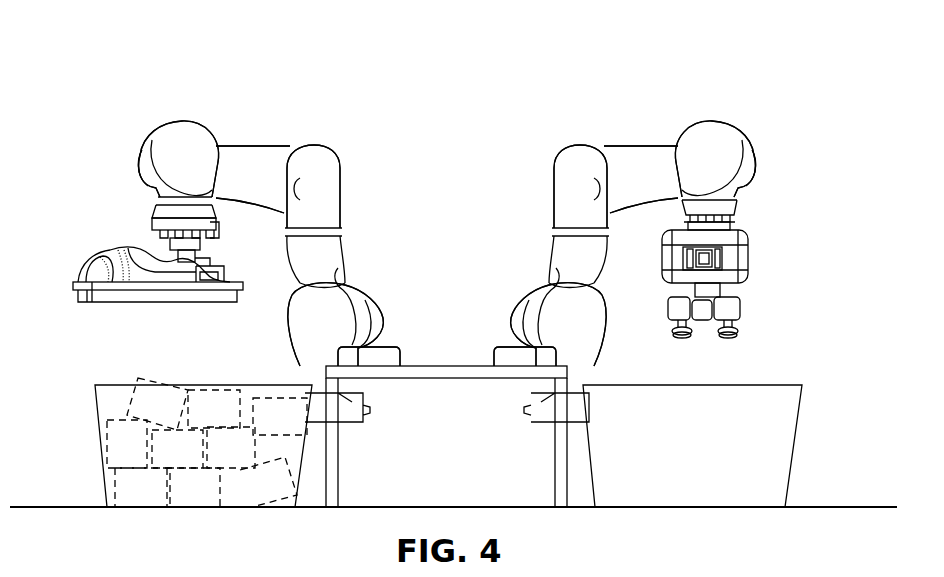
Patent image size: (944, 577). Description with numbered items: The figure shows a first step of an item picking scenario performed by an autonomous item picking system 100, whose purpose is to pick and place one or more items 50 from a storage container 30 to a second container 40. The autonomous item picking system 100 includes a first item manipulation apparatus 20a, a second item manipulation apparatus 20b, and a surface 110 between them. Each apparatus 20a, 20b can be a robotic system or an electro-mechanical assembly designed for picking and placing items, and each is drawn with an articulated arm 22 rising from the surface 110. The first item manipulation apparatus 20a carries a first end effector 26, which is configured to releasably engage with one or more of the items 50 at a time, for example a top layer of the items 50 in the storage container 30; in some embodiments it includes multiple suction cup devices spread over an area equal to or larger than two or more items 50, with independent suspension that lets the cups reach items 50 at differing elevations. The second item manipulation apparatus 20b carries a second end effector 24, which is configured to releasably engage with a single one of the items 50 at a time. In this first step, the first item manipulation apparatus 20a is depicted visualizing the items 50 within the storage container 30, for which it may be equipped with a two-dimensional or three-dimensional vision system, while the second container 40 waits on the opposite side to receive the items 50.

The autonomous item picking system 100 is at (728, 55).
The first item manipulation apparatus 20a is at (220, 224).
The second item manipulation apparatus 20b is at (676, 237).
The robotic arm 22 is at (342, 190).
The second end effector 24 is at (750, 258).
The first end effector 26 is at (108, 255).
The storage container 30 is at (95, 414).
The second container 40 is at (797, 420).
The items 50 is at (171, 412).
The surface 110 is at (400, 365).